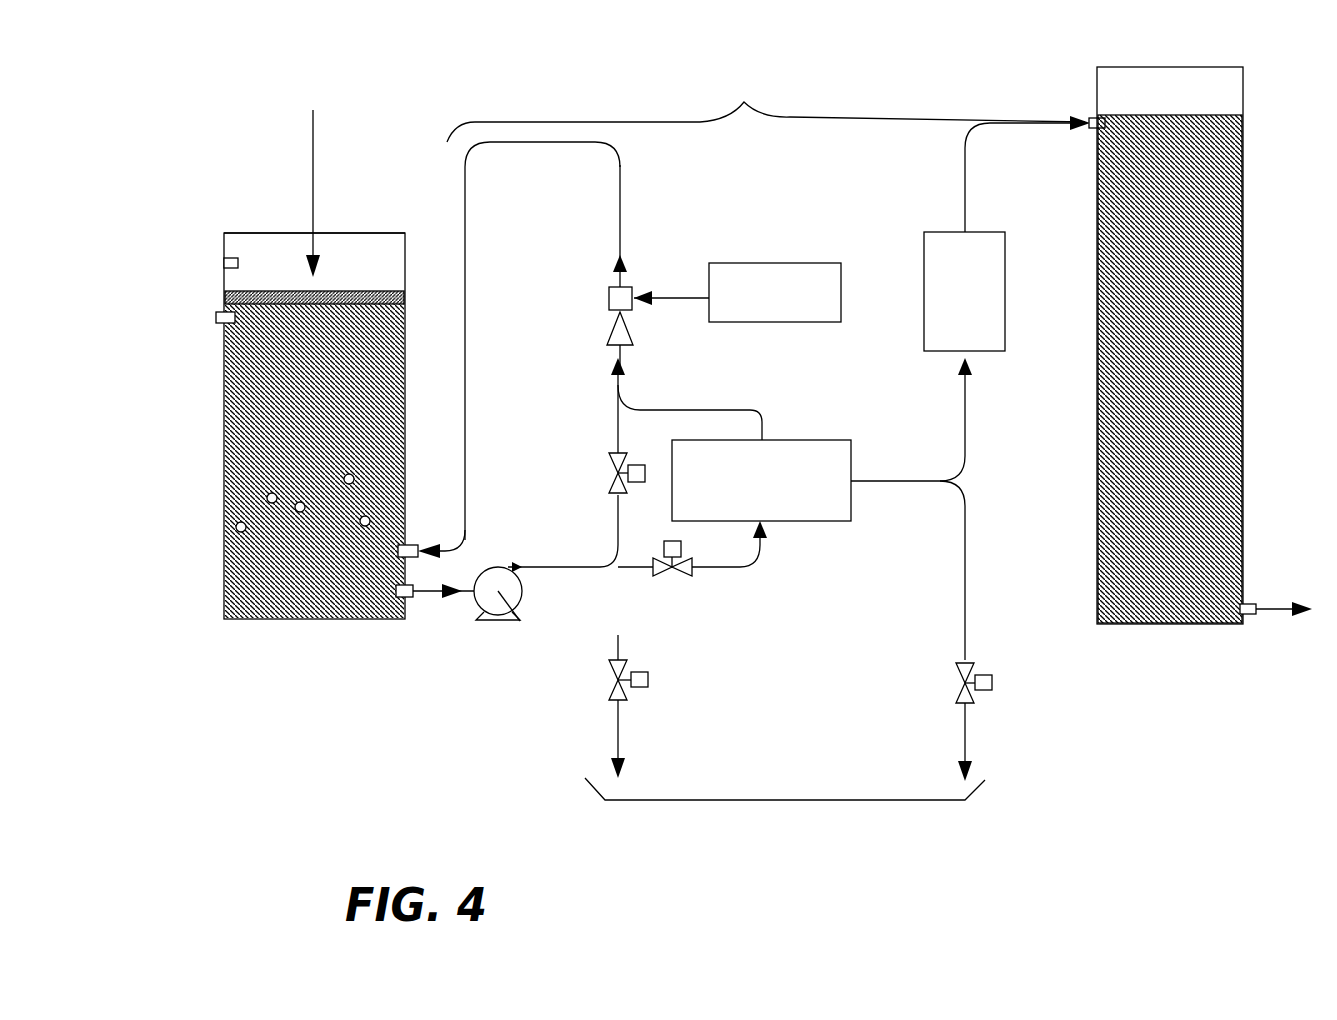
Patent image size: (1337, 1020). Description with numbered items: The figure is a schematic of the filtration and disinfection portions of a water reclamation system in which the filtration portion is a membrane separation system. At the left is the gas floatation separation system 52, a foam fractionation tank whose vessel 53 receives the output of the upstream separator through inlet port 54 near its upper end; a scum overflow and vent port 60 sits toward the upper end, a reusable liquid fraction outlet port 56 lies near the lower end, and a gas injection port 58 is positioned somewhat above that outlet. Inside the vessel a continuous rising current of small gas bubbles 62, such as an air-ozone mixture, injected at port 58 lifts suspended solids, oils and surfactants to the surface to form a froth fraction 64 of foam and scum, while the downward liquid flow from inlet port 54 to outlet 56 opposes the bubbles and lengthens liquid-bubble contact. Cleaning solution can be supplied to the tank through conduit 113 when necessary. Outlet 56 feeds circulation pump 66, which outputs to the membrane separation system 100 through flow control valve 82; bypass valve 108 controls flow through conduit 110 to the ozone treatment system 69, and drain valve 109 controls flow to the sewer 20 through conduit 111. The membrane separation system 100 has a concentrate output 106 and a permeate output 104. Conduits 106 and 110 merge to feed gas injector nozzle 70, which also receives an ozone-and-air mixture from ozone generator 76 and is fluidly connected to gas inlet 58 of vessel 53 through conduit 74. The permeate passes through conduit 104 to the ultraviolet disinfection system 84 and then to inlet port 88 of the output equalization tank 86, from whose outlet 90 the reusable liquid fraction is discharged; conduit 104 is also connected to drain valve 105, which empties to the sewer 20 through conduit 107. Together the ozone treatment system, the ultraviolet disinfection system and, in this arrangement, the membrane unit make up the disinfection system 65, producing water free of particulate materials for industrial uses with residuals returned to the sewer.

The sewer 20 is at (785, 830).
The gas floatation separation system 52 is at (350, 233).
The vessel 53 is at (323, 225).
The inlet port 54 is at (217, 308).
The reusable liquid fraction outlet port 56 is at (412, 600).
The gas injection port 58 is at (425, 551).
The scum overflow and vent port 60 is at (238, 267).
The gas bubbles 62 is at (240, 532).
The froth fraction 64 is at (385, 292).
The disinfection system 65 is at (766, 105).
The circulation pump 66 is at (505, 608).
The ozone treatment system 69 is at (675, 245).
The gas injector nozzle 70 is at (612, 322).
The conduit 74 is at (557, 141).
The ozone generator 76 is at (835, 263).
The flow control valve 82 is at (670, 585).
The ultraviolet disinfection system 84 is at (990, 232).
The output equalization tank 86 is at (1097, 624).
The inlet port 88 is at (1085, 118).
The outlet 90 is at (1243, 624).
The membrane separation system 100 is at (850, 440).
The permeate output conduit 104 is at (880, 485).
The drain valve 105 is at (955, 683).
The concentrate output conduit 106 is at (670, 410).
The conduit 107 is at (955, 730).
The bypass valve 108 is at (612, 473).
The drain valve 109 is at (650, 680).
The conduit 110 is at (616, 430).
The conduit 111 is at (620, 731).
The conduit 113 is at (313, 177).